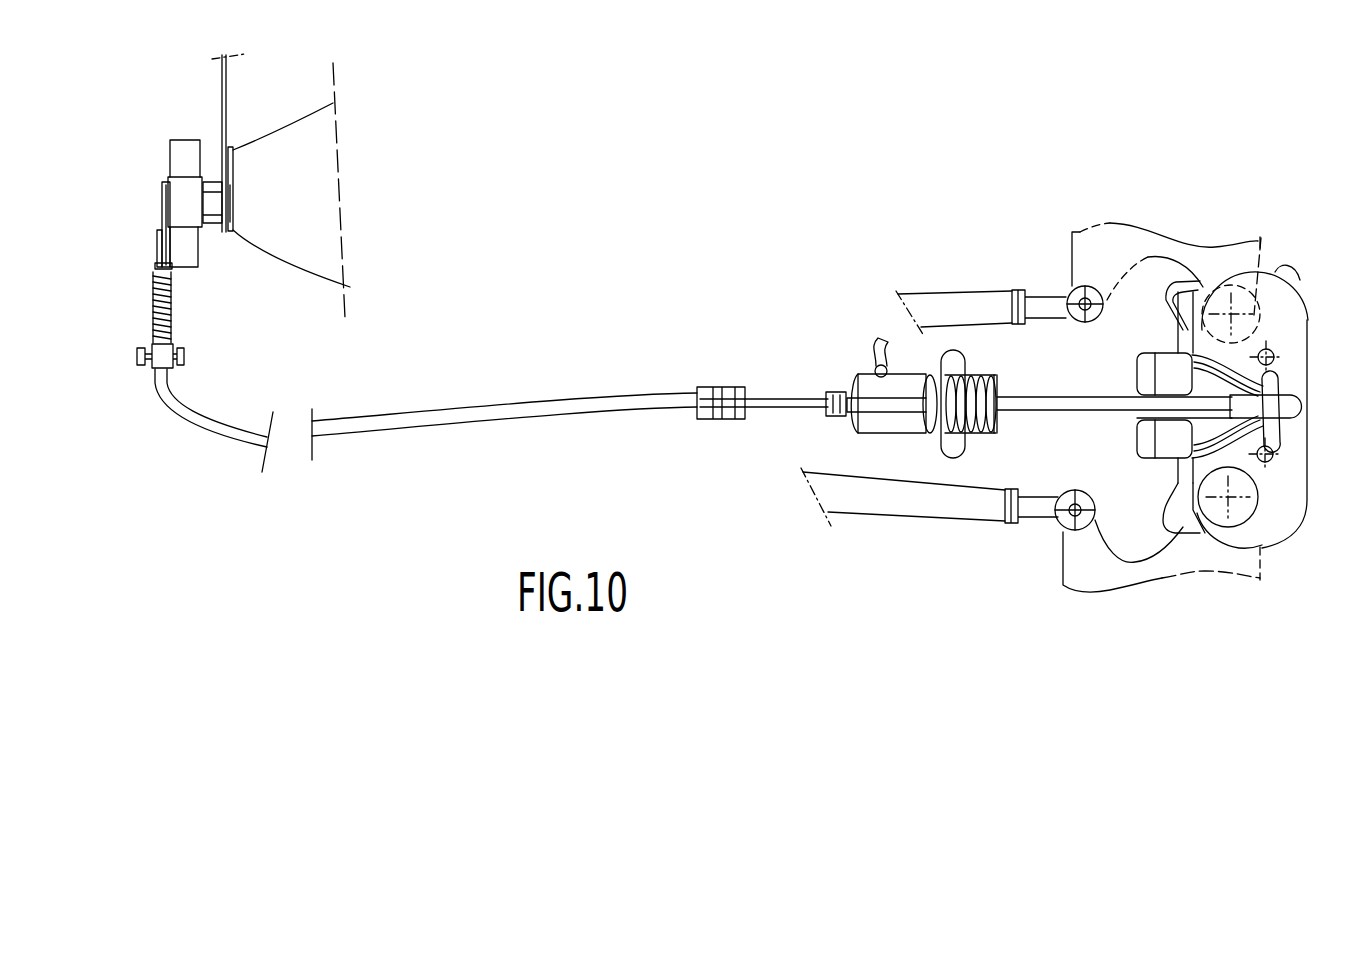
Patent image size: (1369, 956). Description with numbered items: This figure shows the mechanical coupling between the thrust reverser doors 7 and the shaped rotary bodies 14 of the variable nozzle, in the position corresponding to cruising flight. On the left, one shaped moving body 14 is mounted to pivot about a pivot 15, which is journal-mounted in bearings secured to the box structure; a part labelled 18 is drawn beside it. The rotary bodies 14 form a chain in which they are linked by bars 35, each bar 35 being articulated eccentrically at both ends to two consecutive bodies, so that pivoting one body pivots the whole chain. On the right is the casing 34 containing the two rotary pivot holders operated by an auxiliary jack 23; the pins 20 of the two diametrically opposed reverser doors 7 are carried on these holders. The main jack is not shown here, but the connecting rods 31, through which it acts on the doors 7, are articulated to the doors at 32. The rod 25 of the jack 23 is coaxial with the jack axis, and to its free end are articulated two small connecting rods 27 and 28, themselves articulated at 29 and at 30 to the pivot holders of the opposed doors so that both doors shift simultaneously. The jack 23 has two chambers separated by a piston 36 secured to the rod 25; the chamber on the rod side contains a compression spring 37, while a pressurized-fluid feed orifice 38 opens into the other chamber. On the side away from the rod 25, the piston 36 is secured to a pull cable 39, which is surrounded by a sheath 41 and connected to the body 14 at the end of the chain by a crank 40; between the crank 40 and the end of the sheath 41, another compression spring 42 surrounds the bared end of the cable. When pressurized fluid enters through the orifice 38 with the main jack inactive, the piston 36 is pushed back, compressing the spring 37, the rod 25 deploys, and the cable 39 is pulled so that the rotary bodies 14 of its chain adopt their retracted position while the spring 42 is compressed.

The reverser door 7 is at (1145, 232).
The shaped moving body 14 is at (330, 192).
The pivot 15 is at (180, 137).
The washer 18 is at (233, 210).
The pin 20 is at (1240, 310).
The jack 23 is at (881, 444).
The rod 25 is at (1082, 396).
The small connecting rod 27 is at (1280, 386).
The small connecting rod 28 is at (1292, 416).
The articulation 29 is at (1274, 353).
The articulation 30 is at (1280, 460).
The connecting rod 31 is at (927, 300).
The articulation 32 is at (1068, 294).
The casing 34 is at (1290, 307).
The bar 35 is at (232, 78).
The piston 36 is at (925, 418).
The compression spring 37 is at (995, 382).
The pressurized-fluid feed orifice 38 is at (872, 345).
The pull cable 39 is at (437, 430).
The crank 40 is at (162, 207).
The sheath 41 is at (575, 418).
The compression spring 42 is at (172, 320).